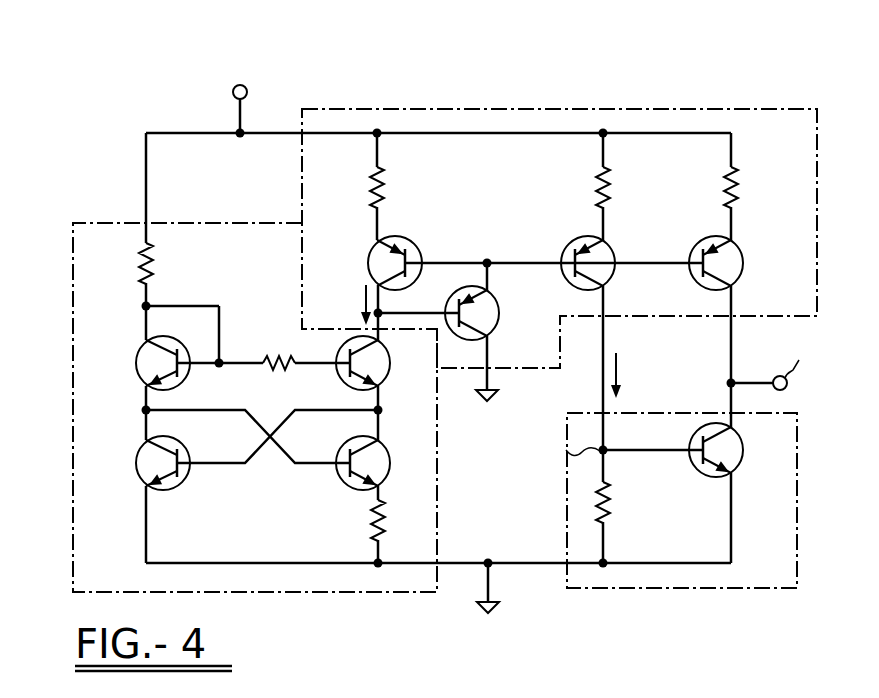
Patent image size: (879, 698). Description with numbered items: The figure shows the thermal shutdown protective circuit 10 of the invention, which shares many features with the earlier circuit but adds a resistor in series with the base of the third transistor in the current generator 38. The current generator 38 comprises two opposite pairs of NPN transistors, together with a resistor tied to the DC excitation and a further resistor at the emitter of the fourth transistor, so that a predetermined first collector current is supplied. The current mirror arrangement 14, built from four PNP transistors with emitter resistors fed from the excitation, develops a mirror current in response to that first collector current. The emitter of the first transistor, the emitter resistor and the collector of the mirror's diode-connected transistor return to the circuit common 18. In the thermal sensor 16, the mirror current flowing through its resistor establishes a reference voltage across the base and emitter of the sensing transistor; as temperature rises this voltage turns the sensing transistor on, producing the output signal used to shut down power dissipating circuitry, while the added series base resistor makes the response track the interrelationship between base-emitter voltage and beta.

The protective circuit 10 is at (638, 85).
The current mirror arrangement 14 is at (405, 108).
The thermal sensor 16 is at (686, 590).
The circuit common 18 is at (498, 607).
The current generator 38 is at (97, 222).